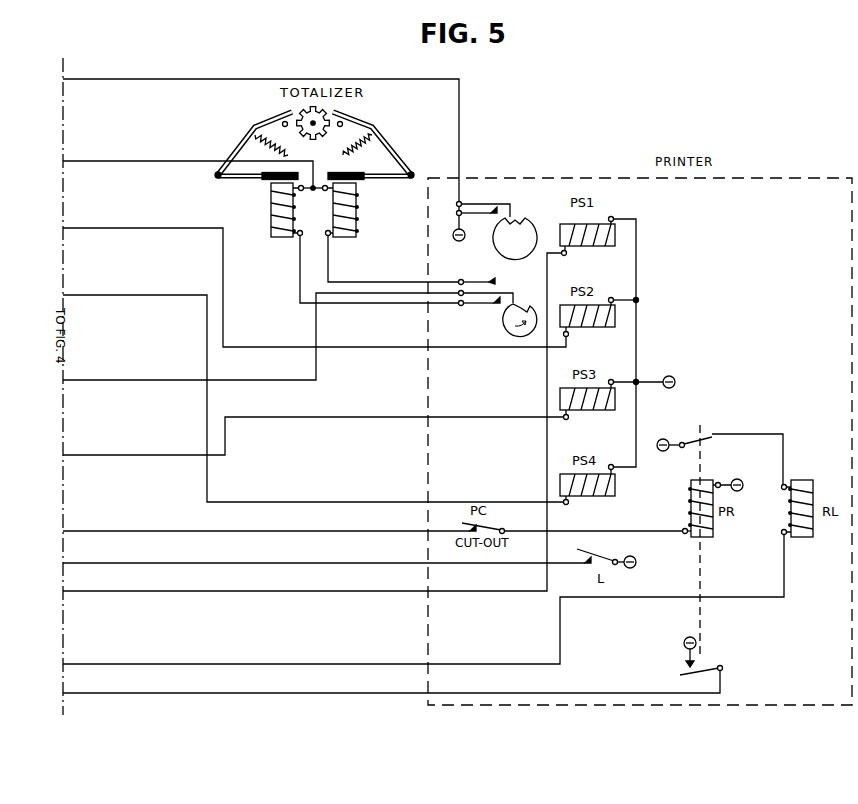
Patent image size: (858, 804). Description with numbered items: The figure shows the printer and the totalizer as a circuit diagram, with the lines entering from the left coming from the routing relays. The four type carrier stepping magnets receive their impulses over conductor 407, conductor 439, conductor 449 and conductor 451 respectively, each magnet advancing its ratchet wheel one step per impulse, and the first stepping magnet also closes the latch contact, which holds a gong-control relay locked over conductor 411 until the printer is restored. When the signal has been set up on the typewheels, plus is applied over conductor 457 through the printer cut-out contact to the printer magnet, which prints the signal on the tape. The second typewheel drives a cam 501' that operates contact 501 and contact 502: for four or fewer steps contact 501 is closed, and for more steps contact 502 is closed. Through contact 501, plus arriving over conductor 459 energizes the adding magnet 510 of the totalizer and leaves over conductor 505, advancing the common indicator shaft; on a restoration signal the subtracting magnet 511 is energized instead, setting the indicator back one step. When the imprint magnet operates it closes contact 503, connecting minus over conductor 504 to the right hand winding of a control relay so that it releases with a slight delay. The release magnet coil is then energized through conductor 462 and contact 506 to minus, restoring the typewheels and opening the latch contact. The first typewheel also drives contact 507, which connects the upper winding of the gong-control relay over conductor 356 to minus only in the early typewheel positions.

The conductor 356 is at (264, 148).
The conductor 505 is at (188, 162).
The conductor 439 is at (314, 276).
The conductor 451 is at (313, 388).
The conductor 459 is at (260, 336).
The conductor 449 is at (313, 436).
The conductor 457 is at (373, 521).
The conductor 411 is at (324, 553).
The conductor 407 is at (312, 423).
The conductor 462 is at (423, 600).
The conductor 504 is at (391, 682).
The adding magnet 510 is at (271, 208).
The subtracting magnet 511 is at (356, 208).
The contact 507 is at (487, 208).
The contact 502 is at (490, 281).
The contact 501 is at (476, 311).
The cam 501' is at (498, 319).
The contact 506 is at (713, 434).
The contact 503 is at (707, 656).